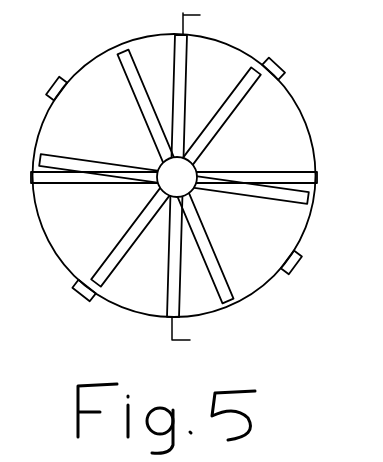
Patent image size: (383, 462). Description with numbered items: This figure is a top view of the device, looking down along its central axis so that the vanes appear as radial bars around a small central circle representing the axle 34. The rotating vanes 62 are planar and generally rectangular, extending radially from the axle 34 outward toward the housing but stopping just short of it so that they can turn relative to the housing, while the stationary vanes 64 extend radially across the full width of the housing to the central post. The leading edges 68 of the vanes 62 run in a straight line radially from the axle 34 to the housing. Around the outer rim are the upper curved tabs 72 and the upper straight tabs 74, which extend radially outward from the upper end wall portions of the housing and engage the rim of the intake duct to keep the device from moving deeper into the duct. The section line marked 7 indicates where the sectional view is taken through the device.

The section line 7- 7 is at (195, 181).
The axle 34 is at (196, 168).
The vanes 62 is at (233, 116).
The vanes 64 is at (189, 80).
The leading edges 68 is at (253, 175).
The upper curved tabs 72 is at (302, 264).
The upper straight tabs 74 is at (55, 73).